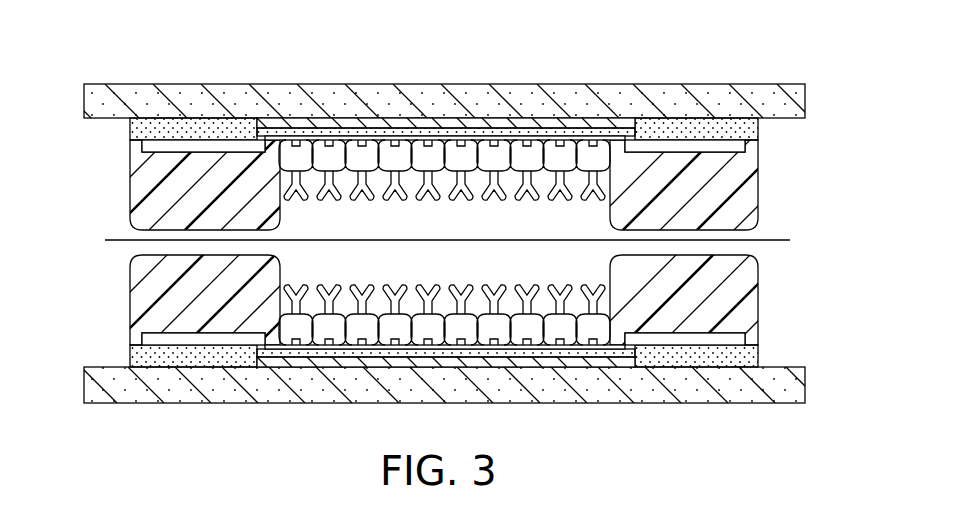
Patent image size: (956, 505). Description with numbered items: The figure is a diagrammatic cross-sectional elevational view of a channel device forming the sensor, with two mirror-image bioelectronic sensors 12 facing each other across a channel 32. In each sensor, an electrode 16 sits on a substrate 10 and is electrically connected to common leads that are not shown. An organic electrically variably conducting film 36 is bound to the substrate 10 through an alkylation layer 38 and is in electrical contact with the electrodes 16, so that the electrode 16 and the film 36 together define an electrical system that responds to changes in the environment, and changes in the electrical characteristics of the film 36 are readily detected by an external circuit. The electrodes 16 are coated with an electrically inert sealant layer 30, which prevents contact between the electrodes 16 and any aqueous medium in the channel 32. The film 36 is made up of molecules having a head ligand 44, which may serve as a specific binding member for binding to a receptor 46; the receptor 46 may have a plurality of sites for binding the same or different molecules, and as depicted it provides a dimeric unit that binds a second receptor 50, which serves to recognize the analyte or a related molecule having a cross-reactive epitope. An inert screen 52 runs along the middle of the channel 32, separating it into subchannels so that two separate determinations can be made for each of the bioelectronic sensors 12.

The substrate 10 is at (462, 244).
The bioelectronic sensor 12 is at (86, 56).
The electrode 16 is at (129, 128).
The electrically inert sealant layer 30 is at (131, 175).
The channel 32 is at (452, 230).
The organic electrically variably conducting film 36 is at (472, 134).
The alkylation layer 38 is at (396, 124).
The head ligand 44 is at (543, 139).
The receptor 46 is at (610, 150).
The second receptor 50 is at (596, 182).
The inert screen 52 is at (429, 240).